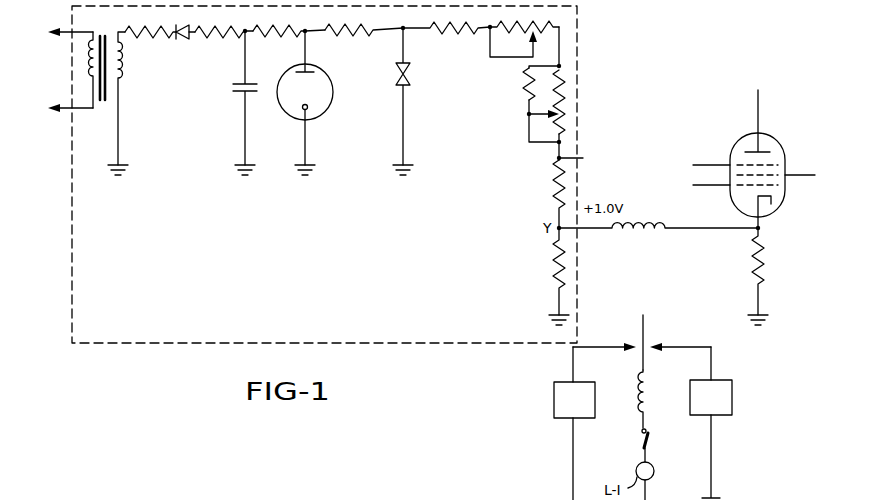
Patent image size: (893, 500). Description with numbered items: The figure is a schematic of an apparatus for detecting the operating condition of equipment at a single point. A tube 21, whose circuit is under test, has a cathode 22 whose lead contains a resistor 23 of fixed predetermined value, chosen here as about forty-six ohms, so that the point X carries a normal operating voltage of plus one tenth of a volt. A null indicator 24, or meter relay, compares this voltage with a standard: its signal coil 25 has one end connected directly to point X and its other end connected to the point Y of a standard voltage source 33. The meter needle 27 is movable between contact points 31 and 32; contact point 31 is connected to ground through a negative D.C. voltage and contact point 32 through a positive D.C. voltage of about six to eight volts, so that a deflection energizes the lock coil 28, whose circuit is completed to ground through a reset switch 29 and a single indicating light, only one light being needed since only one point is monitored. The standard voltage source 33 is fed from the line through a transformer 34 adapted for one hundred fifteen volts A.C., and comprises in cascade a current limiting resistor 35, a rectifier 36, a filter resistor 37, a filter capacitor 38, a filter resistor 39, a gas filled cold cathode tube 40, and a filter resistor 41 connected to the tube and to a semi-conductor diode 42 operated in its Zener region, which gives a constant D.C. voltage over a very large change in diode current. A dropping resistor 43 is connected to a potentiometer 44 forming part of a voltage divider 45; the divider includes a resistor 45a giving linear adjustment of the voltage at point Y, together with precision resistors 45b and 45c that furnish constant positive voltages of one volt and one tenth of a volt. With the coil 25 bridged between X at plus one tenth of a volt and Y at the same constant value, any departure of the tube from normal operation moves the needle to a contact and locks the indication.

The tube 21 is at (779, 84).
The cathode 22 is at (772, 205).
The resistor 23 is at (766, 262).
The null indicator 24 is at (654, 151).
The signal coil 25 is at (620, 233).
The needle 27 is at (646, 322).
The lock coil 28 is at (649, 393).
The reset switch 29 is at (639, 449).
The contact point 31 is at (658, 346).
The contact point 32 is at (632, 345).
The standard voltage source 33 is at (275, 266).
The transformer 34 is at (99, 126).
The current limiting resistor 35 is at (157, 40).
The rectifier 36 is at (181, 40).
The filter resistor 37 is at (217, 38).
The filter capacitor 38 is at (238, 94).
The filter resistor 39 is at (276, 36).
The gas filled cold cathode tube 40 is at (322, 106).
The filter resistor 41 is at (359, 38).
The semi-conductor diode 42 is at (409, 78).
The dropping resistor 43 is at (470, 34).
The potentiometer 44 is at (523, 43).
The voltage divider 45 is at (525, 162).
The resistor 45a is at (523, 101).
The precision resistor 45b is at (568, 112).
The precision resistor 45c is at (566, 188).